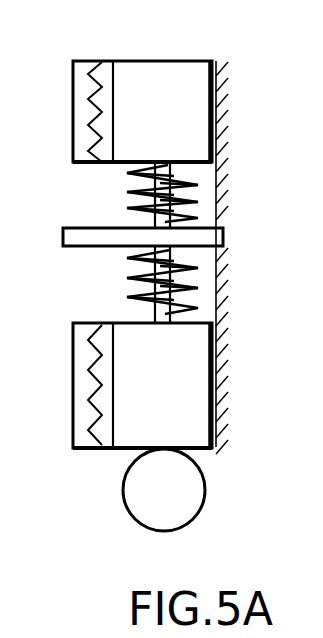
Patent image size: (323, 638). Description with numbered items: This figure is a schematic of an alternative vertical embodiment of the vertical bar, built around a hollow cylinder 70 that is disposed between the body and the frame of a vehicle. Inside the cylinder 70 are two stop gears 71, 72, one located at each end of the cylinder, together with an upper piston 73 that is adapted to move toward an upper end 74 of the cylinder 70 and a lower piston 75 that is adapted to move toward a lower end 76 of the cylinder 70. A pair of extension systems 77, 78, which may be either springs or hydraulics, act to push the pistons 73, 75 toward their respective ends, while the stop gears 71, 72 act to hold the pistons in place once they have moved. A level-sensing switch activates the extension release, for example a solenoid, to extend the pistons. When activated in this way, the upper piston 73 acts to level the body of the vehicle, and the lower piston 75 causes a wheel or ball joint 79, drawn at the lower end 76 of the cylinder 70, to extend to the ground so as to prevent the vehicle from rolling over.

The hollow cylinder 70 is at (216, 90).
The stop gear 71 is at (87, 112).
The stop gear 72 is at (85, 365).
The upper piston 73 is at (198, 140).
The upper end 74 is at (180, 61).
The lower piston 75 is at (192, 389).
The lower end 76 is at (200, 450).
The extension system 77 is at (187, 183).
The extension system 78 is at (185, 262).
The wheel or ball joint 79 is at (178, 515).